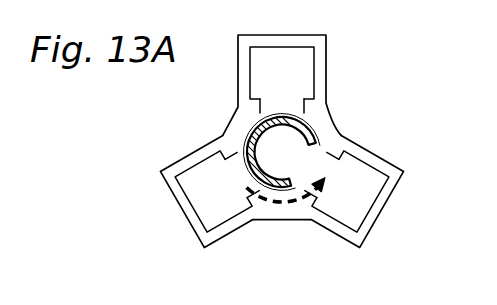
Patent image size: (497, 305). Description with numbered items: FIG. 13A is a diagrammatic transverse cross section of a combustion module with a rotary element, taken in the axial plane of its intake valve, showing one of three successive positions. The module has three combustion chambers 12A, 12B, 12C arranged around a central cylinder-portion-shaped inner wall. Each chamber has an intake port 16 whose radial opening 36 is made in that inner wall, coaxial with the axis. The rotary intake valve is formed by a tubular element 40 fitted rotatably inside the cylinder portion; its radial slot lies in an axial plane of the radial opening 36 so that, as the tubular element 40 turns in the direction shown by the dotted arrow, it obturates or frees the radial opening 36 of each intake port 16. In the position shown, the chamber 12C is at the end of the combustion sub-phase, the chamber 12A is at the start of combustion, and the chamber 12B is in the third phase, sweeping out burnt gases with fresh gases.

The first combustion chamber 12A is at (212, 193).
The second combustion chamber 12B is at (357, 192).
The combustion chamber 12C is at (278, 67).
The intake port 16 is at (281, 104).
The radial opening 36 is at (323, 110).
The tubular element 40 is at (262, 197).